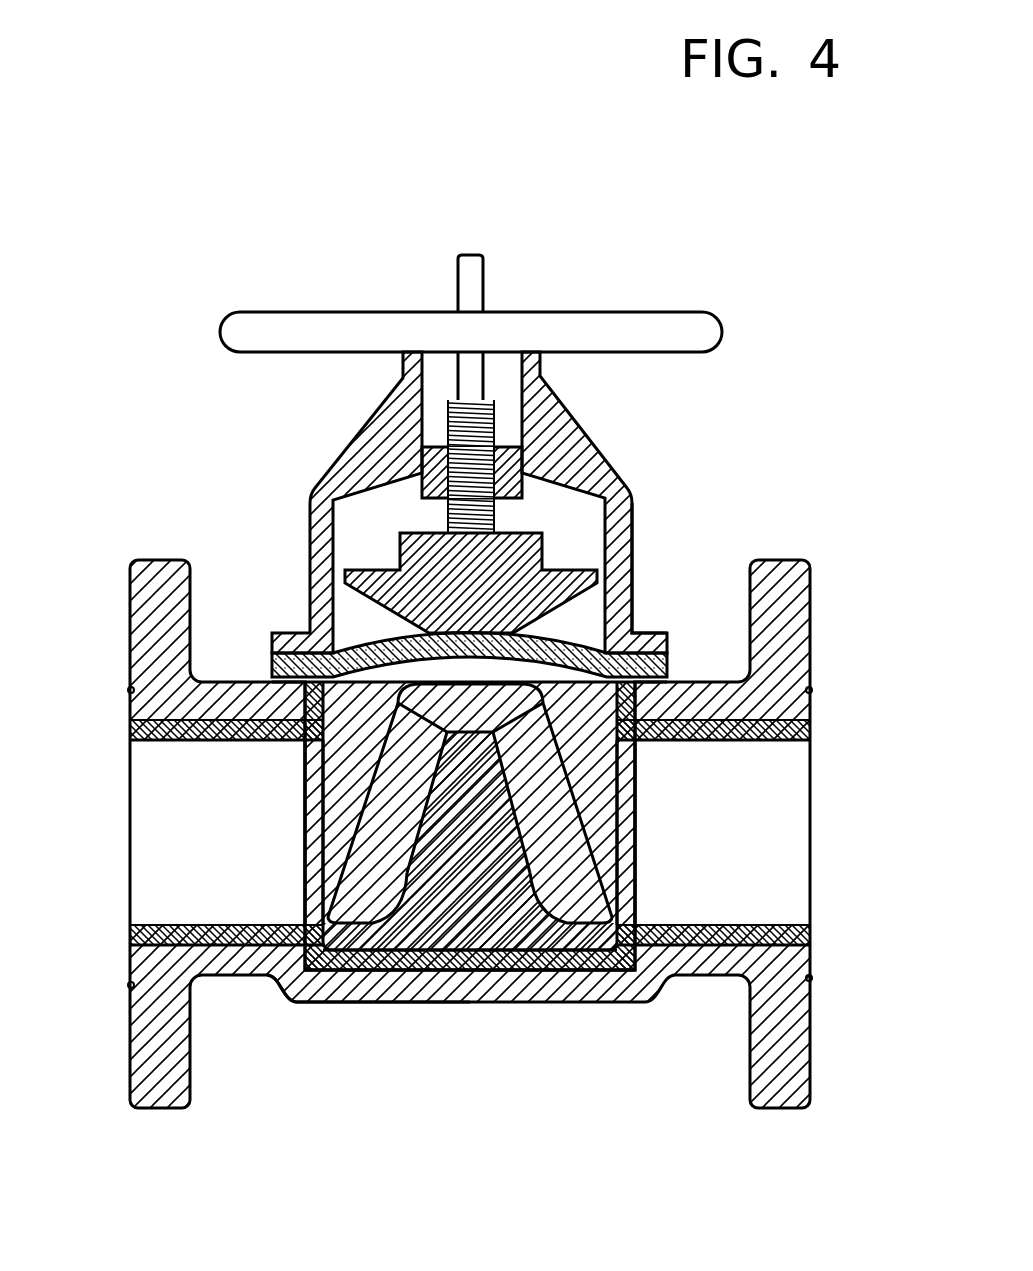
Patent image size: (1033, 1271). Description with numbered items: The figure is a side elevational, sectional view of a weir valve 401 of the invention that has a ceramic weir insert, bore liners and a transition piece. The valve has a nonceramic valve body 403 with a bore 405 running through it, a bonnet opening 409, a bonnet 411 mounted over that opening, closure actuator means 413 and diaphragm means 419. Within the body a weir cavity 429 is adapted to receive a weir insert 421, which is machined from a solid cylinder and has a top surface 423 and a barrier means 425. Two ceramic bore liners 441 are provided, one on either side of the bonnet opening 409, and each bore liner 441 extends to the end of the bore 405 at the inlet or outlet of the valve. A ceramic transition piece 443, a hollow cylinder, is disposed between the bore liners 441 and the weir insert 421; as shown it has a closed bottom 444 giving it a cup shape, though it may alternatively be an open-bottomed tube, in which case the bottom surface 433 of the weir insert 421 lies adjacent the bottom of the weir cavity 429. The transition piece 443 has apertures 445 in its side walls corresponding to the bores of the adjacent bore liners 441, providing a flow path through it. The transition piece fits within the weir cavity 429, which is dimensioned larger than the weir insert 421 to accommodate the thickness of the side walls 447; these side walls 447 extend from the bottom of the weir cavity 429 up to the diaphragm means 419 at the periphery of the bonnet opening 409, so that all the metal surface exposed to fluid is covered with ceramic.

The valve 401 is at (732, 540).
The nonceramic valve body 403 is at (645, 985).
The bore 405 is at (163, 803).
The bonnet opening 409 is at (443, 670).
The bonnet 411 is at (560, 507).
The closure actuator means 413 is at (453, 577).
The diaphragm means 419 is at (640, 553).
The weir insert 421 is at (533, 977).
The top surface 423 is at (487, 707).
The barrier means 425 is at (558, 845).
The weir cavity 429 is at (303, 1002).
The bottom surface 433 is at (517, 950).
The ceramic bore liners 441 is at (187, 935).
The ceramic transition piece 443 is at (317, 787).
The closed bottom 444 is at (392, 1002).
The apertures 445 is at (320, 843).
The side walls 447 is at (318, 912).